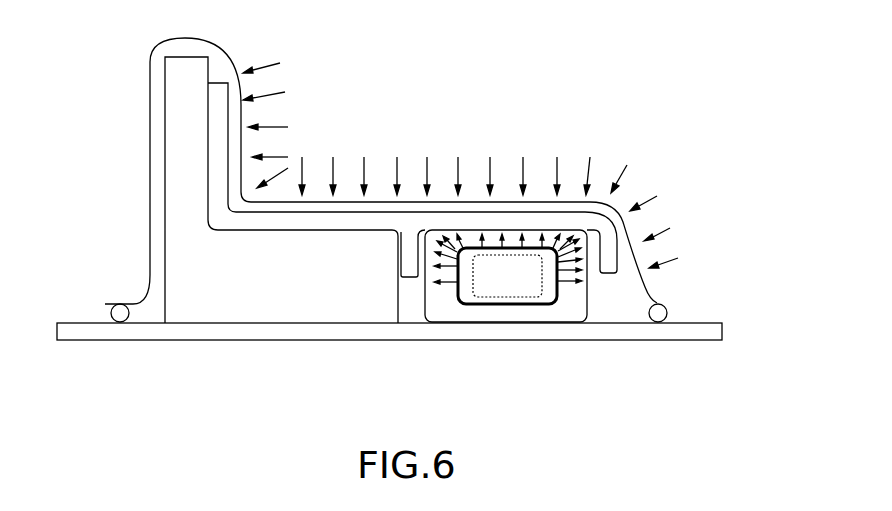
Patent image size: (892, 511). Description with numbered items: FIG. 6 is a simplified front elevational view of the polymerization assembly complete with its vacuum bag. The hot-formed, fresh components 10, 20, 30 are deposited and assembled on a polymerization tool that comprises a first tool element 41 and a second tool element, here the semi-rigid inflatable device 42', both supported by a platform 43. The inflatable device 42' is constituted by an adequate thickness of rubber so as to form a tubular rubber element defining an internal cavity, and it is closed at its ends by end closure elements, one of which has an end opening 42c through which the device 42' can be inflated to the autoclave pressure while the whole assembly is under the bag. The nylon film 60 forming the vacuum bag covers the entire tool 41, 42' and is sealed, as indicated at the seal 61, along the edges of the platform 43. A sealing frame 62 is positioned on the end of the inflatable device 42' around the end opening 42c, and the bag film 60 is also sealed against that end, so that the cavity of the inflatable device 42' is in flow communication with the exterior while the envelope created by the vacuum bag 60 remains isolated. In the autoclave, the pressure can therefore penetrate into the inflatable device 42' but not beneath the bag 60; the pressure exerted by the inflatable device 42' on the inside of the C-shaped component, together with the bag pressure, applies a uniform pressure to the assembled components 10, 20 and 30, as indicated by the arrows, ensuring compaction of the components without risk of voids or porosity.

The hot-formed fresh component 10 is at (412, 168).
The hot-formed fresh component 20 is at (412, 168).
The hot-formed fresh component 30 is at (412, 198).
The first tool element 41 is at (154, 141).
The semi-rigid inflatable device 42' is at (506, 325).
The end opening 42c is at (478, 288).
The platform 43 is at (246, 341).
The nylon film 60 is at (507, 197).
The seal 61 is at (121, 303).
The sealing frame 62 is at (462, 303).